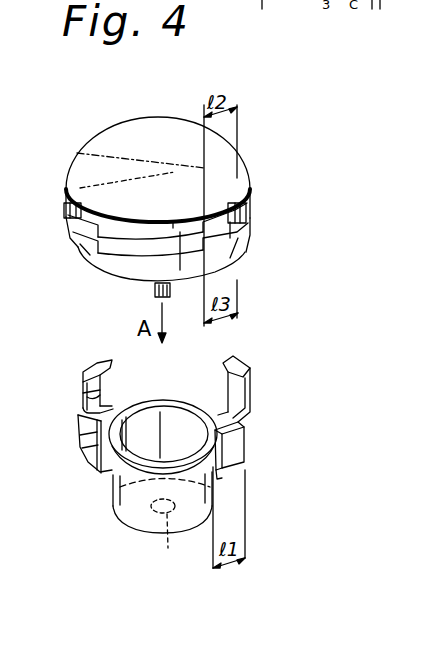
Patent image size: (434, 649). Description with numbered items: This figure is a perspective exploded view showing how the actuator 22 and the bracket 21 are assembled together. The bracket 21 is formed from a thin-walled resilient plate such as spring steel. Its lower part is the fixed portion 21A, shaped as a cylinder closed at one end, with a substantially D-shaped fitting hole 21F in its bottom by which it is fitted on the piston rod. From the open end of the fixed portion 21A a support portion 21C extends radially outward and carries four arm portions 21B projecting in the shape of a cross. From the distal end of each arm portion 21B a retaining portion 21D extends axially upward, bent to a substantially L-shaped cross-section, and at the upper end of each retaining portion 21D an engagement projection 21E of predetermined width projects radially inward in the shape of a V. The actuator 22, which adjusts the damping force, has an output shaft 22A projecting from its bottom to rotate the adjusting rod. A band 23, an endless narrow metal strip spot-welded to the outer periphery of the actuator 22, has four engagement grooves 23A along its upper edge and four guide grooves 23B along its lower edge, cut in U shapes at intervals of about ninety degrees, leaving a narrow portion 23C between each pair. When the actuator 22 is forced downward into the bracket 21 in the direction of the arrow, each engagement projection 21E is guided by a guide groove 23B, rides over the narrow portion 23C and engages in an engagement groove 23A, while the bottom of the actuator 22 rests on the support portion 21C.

The bracket 21 is at (110, 497).
The fixed portion 21A is at (135, 516).
The arm portions 21B is at (83, 408).
The support portion 21C is at (168, 402).
The retaining portions 21D is at (95, 393).
The engagement projection 21E is at (98, 364).
The fitting hole 21F is at (168, 548).
The actuator 22 is at (114, 154).
The output shaft 22A is at (153, 293).
The band 23 is at (132, 248).
The engagement grooves 23A is at (72, 205).
The guide grooves 23B is at (84, 250).
The narrow portion 23C is at (65, 220).